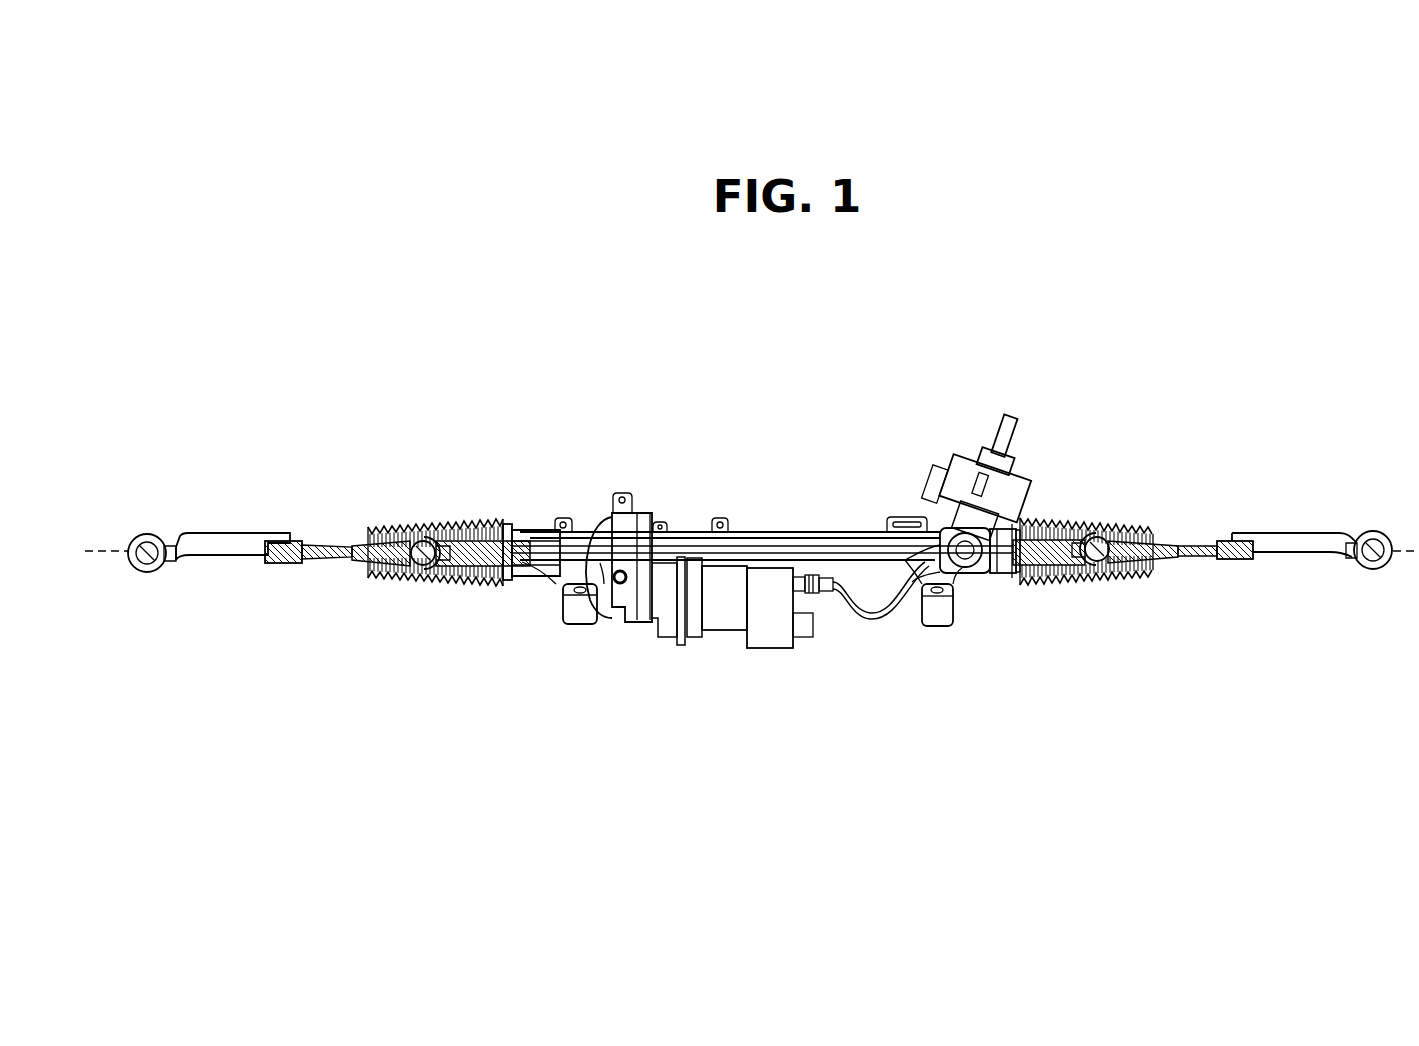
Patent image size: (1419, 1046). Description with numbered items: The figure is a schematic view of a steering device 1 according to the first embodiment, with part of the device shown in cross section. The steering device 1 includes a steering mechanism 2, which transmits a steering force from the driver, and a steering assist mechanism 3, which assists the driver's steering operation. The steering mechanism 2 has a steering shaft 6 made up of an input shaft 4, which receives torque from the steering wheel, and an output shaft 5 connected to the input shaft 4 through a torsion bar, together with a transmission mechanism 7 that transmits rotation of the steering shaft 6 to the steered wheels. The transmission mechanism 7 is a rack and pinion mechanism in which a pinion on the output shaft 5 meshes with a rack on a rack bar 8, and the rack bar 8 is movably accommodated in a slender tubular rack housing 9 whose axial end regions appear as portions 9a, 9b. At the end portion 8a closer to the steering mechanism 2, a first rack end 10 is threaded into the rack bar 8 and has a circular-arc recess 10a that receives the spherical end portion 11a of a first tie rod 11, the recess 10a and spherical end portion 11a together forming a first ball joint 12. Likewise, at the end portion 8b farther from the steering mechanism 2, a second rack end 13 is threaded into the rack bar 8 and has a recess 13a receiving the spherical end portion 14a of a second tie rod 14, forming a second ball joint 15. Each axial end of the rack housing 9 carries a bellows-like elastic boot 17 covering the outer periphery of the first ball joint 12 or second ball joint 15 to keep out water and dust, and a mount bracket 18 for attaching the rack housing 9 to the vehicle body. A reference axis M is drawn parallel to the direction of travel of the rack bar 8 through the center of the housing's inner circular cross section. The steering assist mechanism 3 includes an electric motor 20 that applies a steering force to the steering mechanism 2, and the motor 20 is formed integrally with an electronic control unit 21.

The steering device 1 is at (150, 253).
The steering mechanism 2 is at (930, 462).
The steering assist mechanism 3 is at (597, 665).
The input shaft 4 is at (1020, 428).
The output shaft 5 is at (1040, 495).
The steering shaft 6 is at (1110, 388).
The transmission mechanism 7 is at (990, 645).
The rack bar 8 is at (1053, 577).
The end portion 8a is at (1090, 523).
The end portion 8b is at (453, 523).
The rack housing 9 is at (737, 530).
The first end of rack housing 9a is at (1028, 575).
The second end of rack housing 9b is at (493, 580).
The first rack end 10 is at (1178, 545).
The recess 10a is at (1113, 577).
The first tie rod 11 is at (1220, 542).
The spherical end portion 11a is at (1137, 580).
The first ball joint 12 is at (1125, 668).
The second rack end 13 is at (423, 540).
The recess 13a is at (420, 582).
The second tie rod 14 is at (347, 540).
The spherical end portion 14a is at (408, 578).
The second ball joint 15 is at (454, 652).
The boot 17 is at (475, 528).
The mount bracket 18 is at (577, 608).
The motor 20 is at (722, 622).
The electronic control unit 21 is at (772, 635).
The reference axis M is at (90, 550).